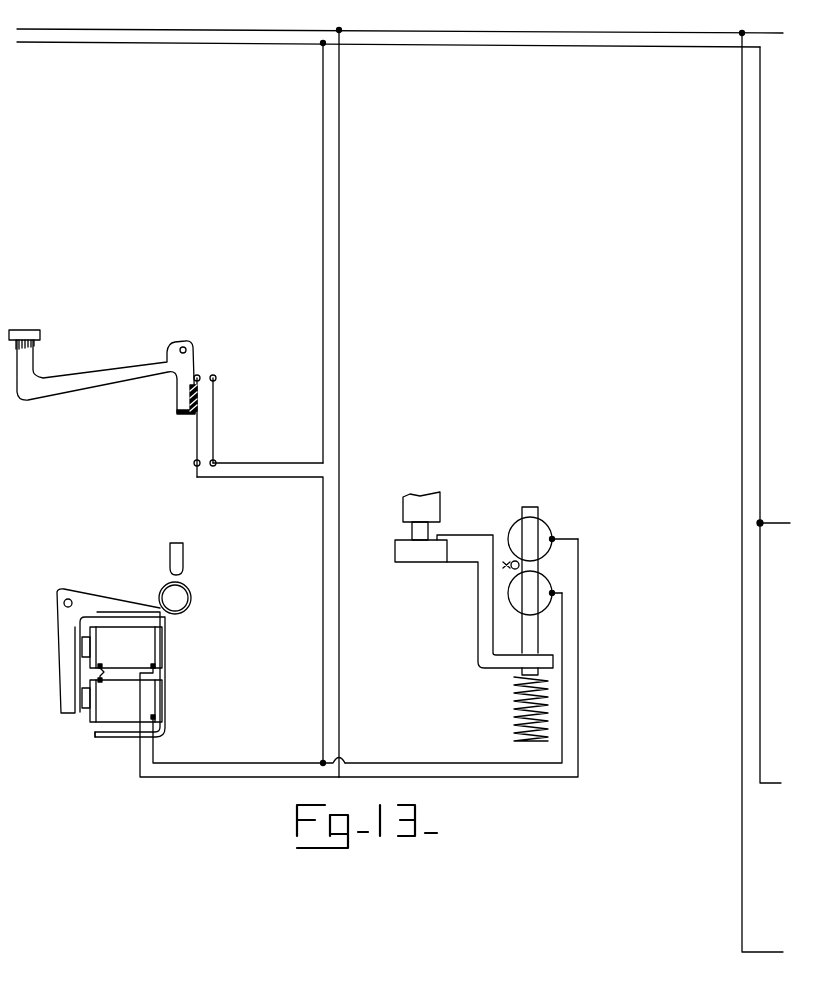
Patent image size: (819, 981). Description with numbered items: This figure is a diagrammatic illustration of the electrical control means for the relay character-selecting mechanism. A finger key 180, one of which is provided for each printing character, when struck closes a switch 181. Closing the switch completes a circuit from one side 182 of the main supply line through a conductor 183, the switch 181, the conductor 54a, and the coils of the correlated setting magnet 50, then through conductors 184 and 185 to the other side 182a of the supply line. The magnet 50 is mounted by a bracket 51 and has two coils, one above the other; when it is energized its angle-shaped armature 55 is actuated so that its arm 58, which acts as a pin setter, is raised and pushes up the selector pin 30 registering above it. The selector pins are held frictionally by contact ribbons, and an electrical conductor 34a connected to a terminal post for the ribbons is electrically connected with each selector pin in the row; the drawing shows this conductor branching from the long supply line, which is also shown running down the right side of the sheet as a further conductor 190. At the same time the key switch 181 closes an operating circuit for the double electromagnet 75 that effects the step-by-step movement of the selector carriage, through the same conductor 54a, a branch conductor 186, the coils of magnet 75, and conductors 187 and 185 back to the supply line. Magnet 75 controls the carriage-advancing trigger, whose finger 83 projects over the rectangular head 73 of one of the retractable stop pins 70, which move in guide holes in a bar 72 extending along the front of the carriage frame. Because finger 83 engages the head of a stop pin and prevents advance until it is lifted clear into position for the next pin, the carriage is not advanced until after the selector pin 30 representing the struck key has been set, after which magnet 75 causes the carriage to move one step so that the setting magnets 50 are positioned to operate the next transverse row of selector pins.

The other side of the supply line 182a is at (151, 22).
The side of main supply line 182 is at (388, 52).
The conductor 183 is at (322, 266).
The conductor 190 is at (760, 291).
The electrical conductor 34a is at (776, 534).
The finger key 180 is at (40, 332).
The switch 181 is at (206, 371).
The conductor 185 is at (340, 661).
The selector pin 30 is at (181, 566).
The arm 58 is at (187, 615).
The magnet armature 55 is at (74, 656).
The bracket 51 is at (170, 696).
The electromagnet 50 is at (122, 674).
The conductor 184 is at (226, 778).
The electrical conductor 54a is at (305, 748).
The branch conductor 186 is at (450, 763).
The conductor 187 is at (456, 778).
The bar 72 is at (405, 500).
The stop pin 70 is at (410, 529).
The head 73 is at (421, 551).
The finger 83 is at (438, 535).
The double electromagnet 75 is at (545, 553).